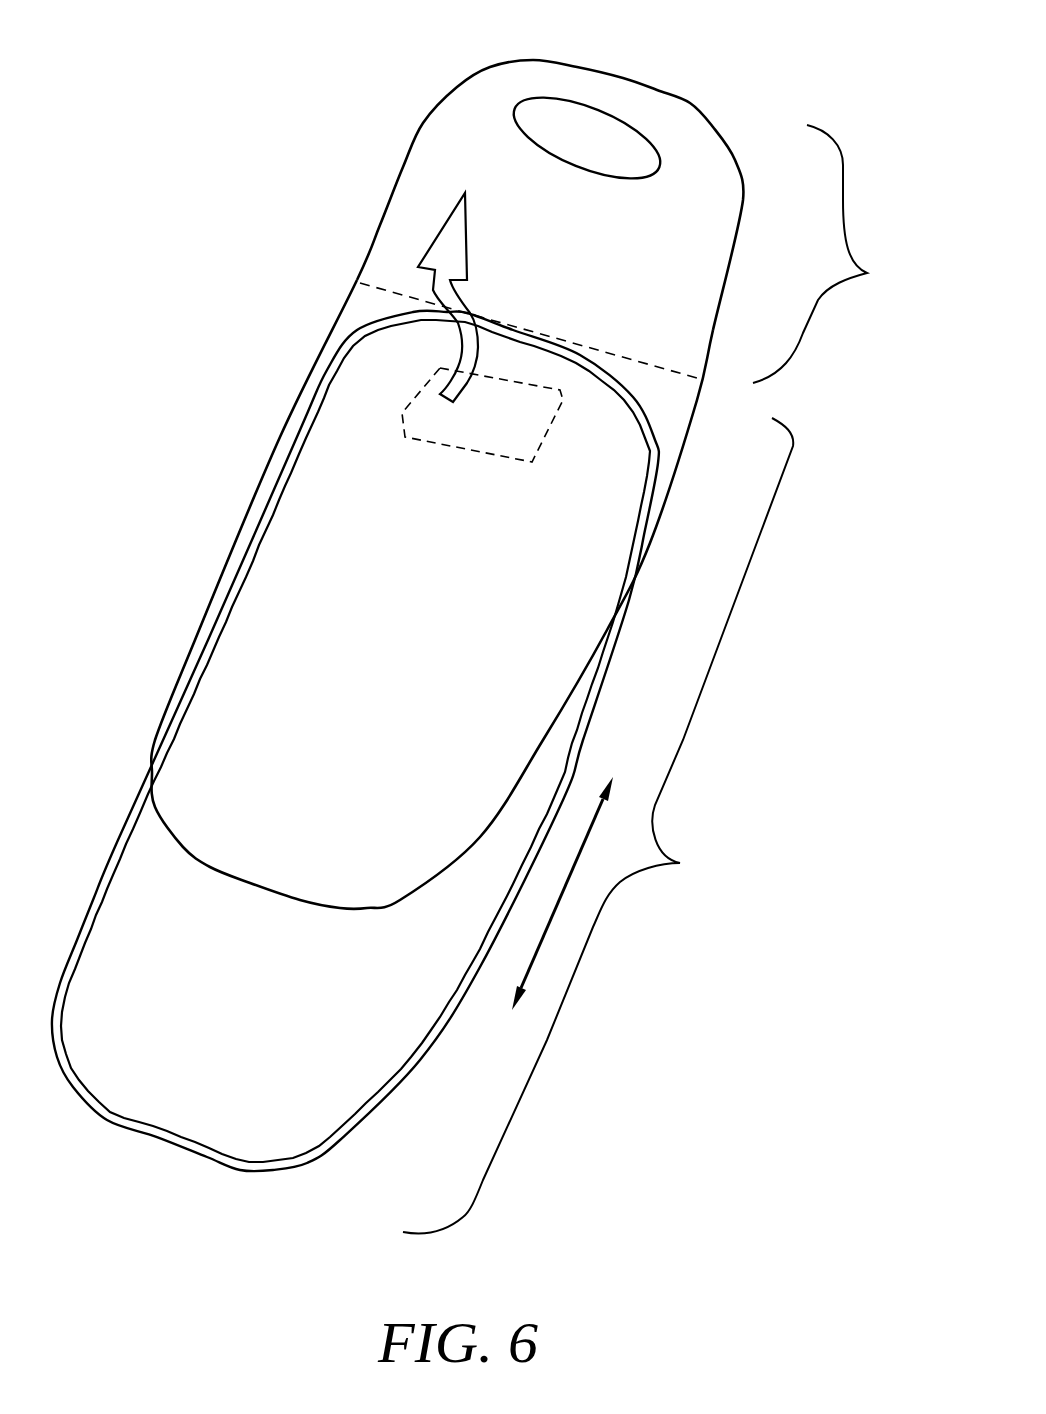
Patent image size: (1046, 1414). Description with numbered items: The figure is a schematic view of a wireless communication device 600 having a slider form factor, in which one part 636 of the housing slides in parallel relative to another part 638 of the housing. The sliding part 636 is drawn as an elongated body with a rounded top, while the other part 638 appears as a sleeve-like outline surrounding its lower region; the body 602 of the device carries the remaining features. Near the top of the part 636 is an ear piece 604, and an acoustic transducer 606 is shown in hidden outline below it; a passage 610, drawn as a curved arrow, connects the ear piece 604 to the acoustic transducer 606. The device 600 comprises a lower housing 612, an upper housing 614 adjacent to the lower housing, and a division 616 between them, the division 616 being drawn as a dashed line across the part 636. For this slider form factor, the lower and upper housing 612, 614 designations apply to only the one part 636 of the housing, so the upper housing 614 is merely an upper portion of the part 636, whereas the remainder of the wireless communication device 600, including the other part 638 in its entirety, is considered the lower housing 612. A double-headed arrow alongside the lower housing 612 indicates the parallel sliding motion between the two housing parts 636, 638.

The wireless communication device 600 is at (115, 30).
The body 602 is at (218, 370).
The ear piece 604 is at (528, 132).
The acoustic transducer 606 is at (472, 437).
The passage 610 is at (467, 352).
The lower housing 612 is at (598, 825).
The upper housing 614 is at (833, 254).
The division 616 is at (638, 355).
The one part of the housing 636 is at (403, 165).
The other part of the housing 638 is at (85, 927).